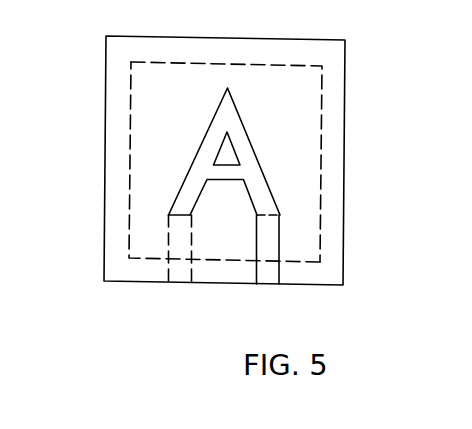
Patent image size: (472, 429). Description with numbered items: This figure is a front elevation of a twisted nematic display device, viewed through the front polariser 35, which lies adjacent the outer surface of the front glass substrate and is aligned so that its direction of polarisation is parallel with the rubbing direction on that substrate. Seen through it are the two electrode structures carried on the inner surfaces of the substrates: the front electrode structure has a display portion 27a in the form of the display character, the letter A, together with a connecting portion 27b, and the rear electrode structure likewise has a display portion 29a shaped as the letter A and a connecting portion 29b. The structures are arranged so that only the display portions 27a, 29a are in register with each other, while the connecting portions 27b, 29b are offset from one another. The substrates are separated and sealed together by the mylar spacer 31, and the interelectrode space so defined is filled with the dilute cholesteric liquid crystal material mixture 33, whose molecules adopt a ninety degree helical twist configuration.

The display portion 27a is at (226, 108).
The connecting portion 27b is at (268, 273).
The display portion 29a is at (200, 162).
The connecting portion 29b is at (182, 270).
The mylar spacer 31 is at (331, 183).
The dilute cholesteric liquid crystal material mixture 33 is at (303, 240).
The front polariser 35 is at (288, 88).